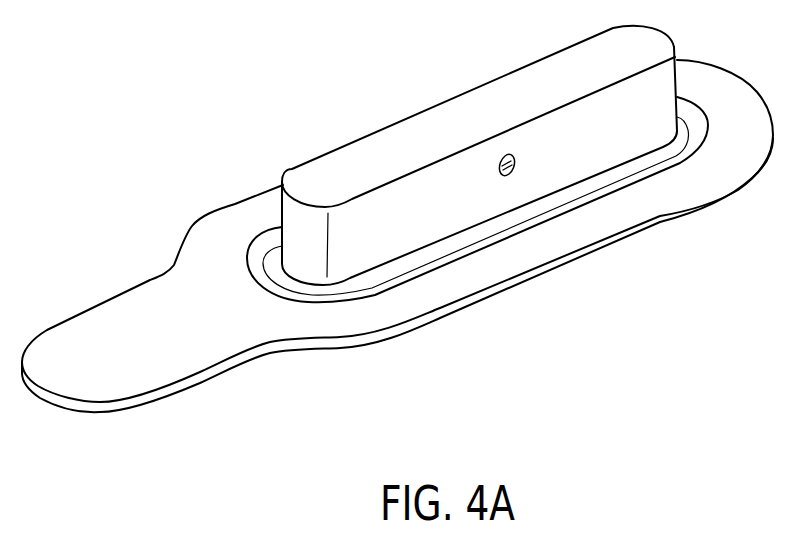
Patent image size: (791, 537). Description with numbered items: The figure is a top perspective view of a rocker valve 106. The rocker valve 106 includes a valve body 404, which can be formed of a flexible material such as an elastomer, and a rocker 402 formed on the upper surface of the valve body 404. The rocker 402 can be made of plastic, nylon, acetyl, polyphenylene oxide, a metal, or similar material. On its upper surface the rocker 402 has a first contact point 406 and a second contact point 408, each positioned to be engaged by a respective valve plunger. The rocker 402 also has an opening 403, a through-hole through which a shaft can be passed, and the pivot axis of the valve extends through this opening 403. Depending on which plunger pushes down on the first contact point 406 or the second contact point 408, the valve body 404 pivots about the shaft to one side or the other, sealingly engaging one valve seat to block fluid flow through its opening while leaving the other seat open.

The rocker valve 106 is at (397, 206).
The rocker 402 is at (479, 142).
The opening 403 is at (511, 152).
The valve body 404 is at (563, 262).
The first contact point 406 is at (323, 165).
The second contact point 408 is at (630, 48).